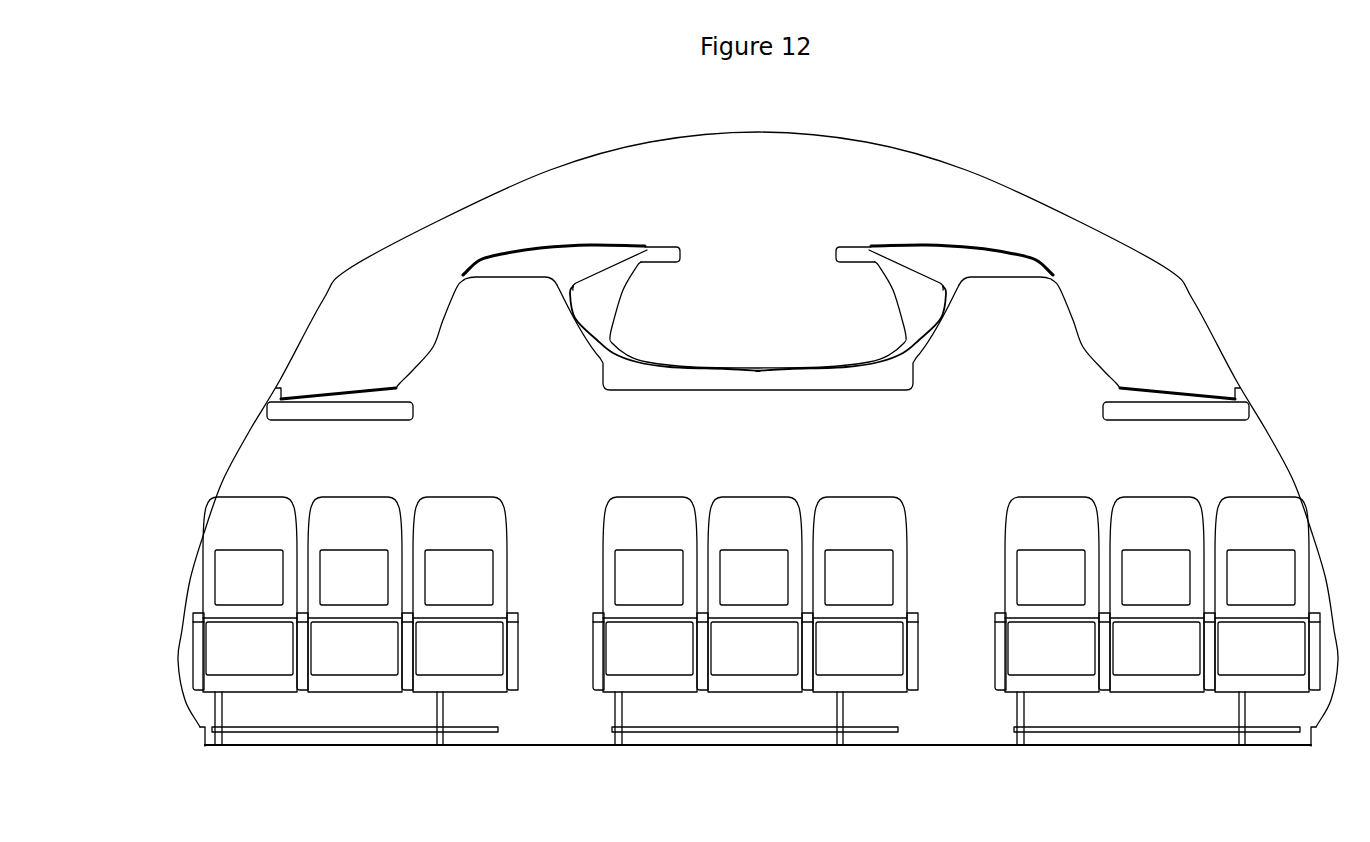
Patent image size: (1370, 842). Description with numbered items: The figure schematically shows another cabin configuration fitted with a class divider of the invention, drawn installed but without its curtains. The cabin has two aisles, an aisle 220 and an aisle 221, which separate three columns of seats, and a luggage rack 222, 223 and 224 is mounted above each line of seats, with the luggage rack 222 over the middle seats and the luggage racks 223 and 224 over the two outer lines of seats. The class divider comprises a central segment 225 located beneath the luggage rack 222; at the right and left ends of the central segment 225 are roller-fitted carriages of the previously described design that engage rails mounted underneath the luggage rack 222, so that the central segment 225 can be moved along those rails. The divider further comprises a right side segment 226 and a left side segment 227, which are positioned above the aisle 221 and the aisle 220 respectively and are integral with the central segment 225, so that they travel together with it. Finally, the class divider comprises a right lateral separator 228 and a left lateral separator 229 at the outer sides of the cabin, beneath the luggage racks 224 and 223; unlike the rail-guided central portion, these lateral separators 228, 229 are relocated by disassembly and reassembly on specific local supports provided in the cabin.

The aisle 220 is at (560, 634).
The aisle 221 is at (962, 627).
The luggage rack 222 is at (758, 316).
The luggage rack 223 is at (416, 338).
The luggage rack 224 is at (1099, 338).
The central segment 225 is at (813, 380).
The right side segment 226 is at (977, 265).
The left side segment 227 is at (533, 268).
The right lateral separator 228 is at (1138, 405).
The left lateral separator 229 is at (368, 410).